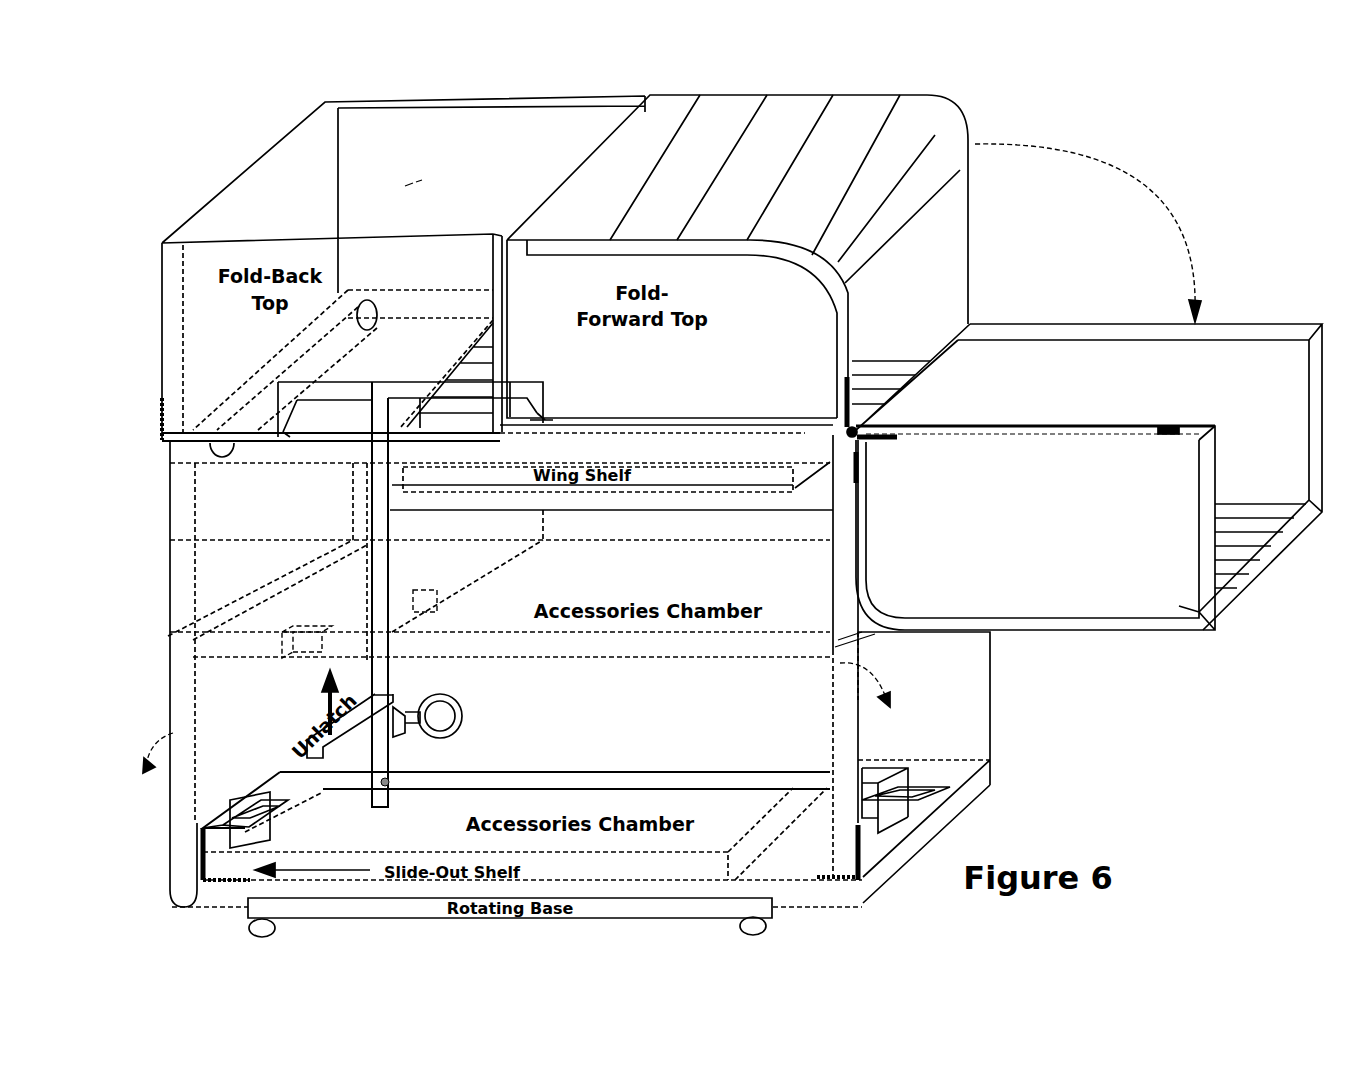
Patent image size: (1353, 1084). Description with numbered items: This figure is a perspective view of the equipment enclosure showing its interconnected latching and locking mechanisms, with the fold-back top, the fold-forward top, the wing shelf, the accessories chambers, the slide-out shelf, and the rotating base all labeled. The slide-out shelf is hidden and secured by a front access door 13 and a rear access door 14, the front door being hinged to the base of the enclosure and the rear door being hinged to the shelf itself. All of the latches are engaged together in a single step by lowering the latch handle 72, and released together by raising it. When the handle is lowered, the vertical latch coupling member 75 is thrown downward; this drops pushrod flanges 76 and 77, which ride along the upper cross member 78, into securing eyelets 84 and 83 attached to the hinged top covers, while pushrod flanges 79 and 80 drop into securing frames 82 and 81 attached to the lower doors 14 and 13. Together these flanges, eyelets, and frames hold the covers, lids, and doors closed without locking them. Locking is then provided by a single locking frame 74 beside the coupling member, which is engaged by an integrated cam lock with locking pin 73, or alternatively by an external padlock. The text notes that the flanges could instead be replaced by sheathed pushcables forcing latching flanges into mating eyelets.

The front access door 13 is at (853, 692).
The rear access door 14 is at (197, 762).
The latch handle 72 is at (297, 746).
The cam lock with locking pin 73 is at (465, 714).
The locking frame 74 is at (403, 703).
The vertical latch coupling member 75 is at (372, 567).
The pushrod flange 76 is at (277, 403).
The pushrod flange 77 is at (543, 392).
The cross bar 78 is at (573, 773).
The pushrod flange 79 is at (263, 838).
The pushrod flange 80 is at (893, 822).
The securing frame 81 is at (935, 797).
The securing frame 82 is at (220, 817).
The securing eyelet 83 is at (557, 415).
The securing eyelet 84 is at (278, 435).